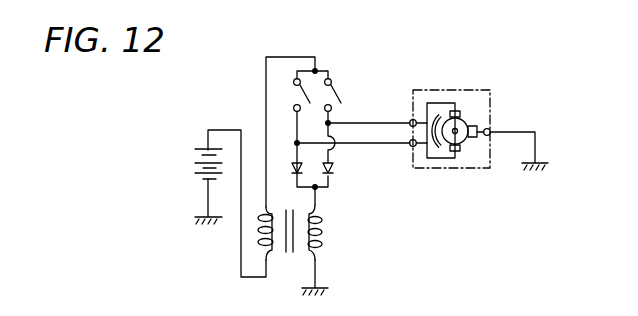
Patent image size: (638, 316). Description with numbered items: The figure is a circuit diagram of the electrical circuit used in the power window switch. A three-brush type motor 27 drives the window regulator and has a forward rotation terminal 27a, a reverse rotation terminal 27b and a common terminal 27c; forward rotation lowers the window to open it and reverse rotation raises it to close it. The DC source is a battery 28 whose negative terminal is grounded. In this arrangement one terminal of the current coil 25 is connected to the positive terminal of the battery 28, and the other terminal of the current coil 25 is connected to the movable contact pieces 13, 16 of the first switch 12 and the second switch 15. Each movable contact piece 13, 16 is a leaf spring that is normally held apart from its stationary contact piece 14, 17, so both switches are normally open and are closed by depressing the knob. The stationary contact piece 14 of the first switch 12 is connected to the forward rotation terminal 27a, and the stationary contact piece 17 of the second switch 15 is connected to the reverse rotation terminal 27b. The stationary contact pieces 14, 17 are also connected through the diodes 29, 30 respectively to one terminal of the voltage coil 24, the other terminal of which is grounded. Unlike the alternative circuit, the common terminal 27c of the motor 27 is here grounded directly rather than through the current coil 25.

The first switch 12 is at (305, 65).
The movable contact piece 13 is at (340, 93).
The stationary contact piece 14 is at (331, 112).
The second switch 15 is at (283, 87).
The movable contact piece 16 is at (305, 70).
The stationary contact piece 17 is at (294, 110).
The voltage coil 24 is at (324, 232).
The current coil 25 is at (258, 231).
The three-brush type motor 27 is at (469, 126).
The forward rotation terminal 27a is at (413, 120).
The reverse rotation terminal 27b is at (412, 146).
The common terminal 27c is at (489, 136).
The battery 28 is at (192, 165).
The diode 29 is at (333, 171).
The diode 30 is at (292, 170).